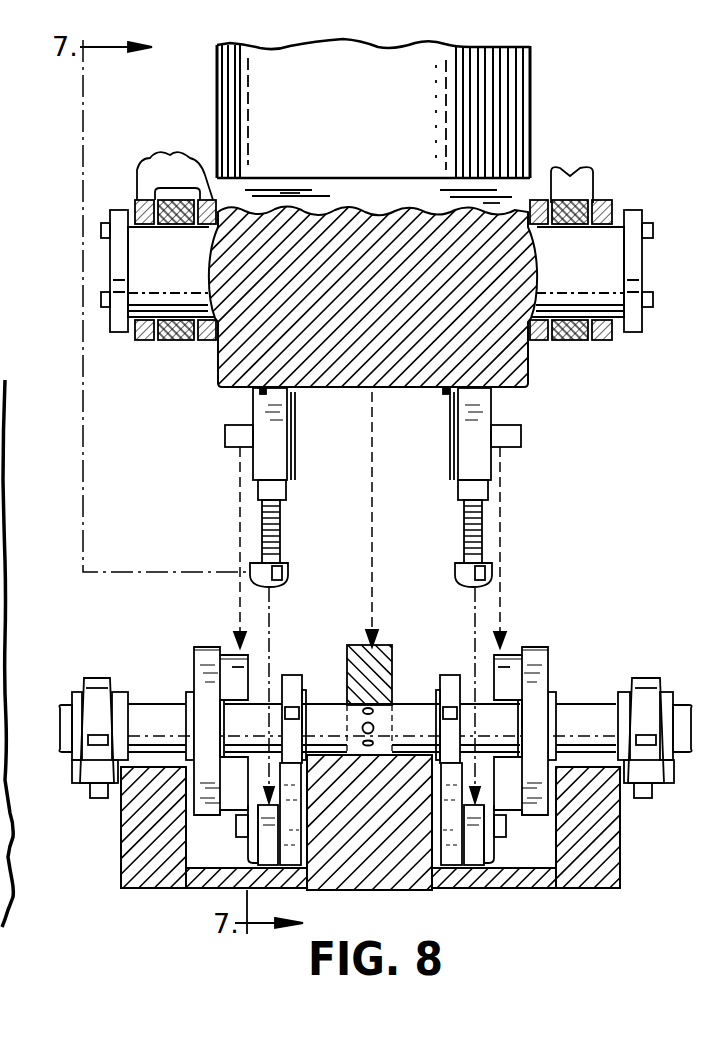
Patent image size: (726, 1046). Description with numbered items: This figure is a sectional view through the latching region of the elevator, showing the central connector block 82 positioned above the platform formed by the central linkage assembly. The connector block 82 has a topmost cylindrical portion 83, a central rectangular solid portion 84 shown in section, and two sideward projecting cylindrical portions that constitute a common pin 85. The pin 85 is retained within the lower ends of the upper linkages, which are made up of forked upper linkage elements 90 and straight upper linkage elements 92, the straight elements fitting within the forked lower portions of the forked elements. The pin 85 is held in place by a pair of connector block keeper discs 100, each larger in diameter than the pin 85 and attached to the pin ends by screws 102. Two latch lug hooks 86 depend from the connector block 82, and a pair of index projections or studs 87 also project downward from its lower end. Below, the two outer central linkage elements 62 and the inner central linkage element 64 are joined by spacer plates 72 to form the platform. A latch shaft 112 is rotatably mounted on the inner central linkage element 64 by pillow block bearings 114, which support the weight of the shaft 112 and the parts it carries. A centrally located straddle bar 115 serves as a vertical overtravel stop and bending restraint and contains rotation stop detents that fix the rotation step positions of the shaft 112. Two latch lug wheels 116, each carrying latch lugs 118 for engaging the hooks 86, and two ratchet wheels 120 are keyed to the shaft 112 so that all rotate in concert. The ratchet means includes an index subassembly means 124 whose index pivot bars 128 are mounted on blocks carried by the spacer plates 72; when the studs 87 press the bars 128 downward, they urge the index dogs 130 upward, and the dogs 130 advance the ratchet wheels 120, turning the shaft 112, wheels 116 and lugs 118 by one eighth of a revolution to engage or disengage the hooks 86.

The outer central linkage element 62 is at (120, 840).
The inner central linkage element 64 is at (364, 880).
The spacer plate 72 is at (205, 875).
The central connector block 82 is at (460, 187).
The topmost cylindrical portion 83 is at (220, 88).
The central rectangular solid portion 84 is at (530, 365).
The pin 85 is at (182, 272).
The latch lug hook 86 is at (265, 420).
The index projection 87 is at (285, 568).
The forked upper linkage element 90 is at (208, 198).
The straight upper linkage element 92 is at (160, 343).
The connector block keeper disc 100 is at (113, 252).
The screw 102 is at (100, 300).
The latch shaft 112 is at (156, 708).
The pillow block bearing 114 is at (92, 680).
The straddle bar 115 is at (390, 646).
The latch lug wheel 116 is at (205, 647).
The latch lug 118 is at (236, 667).
The ratchet wheel 120 is at (292, 682).
The index subassembly means 124 is at (246, 846).
The index pivot bar 128 is at (266, 862).
The index dog 130 is at (288, 865).